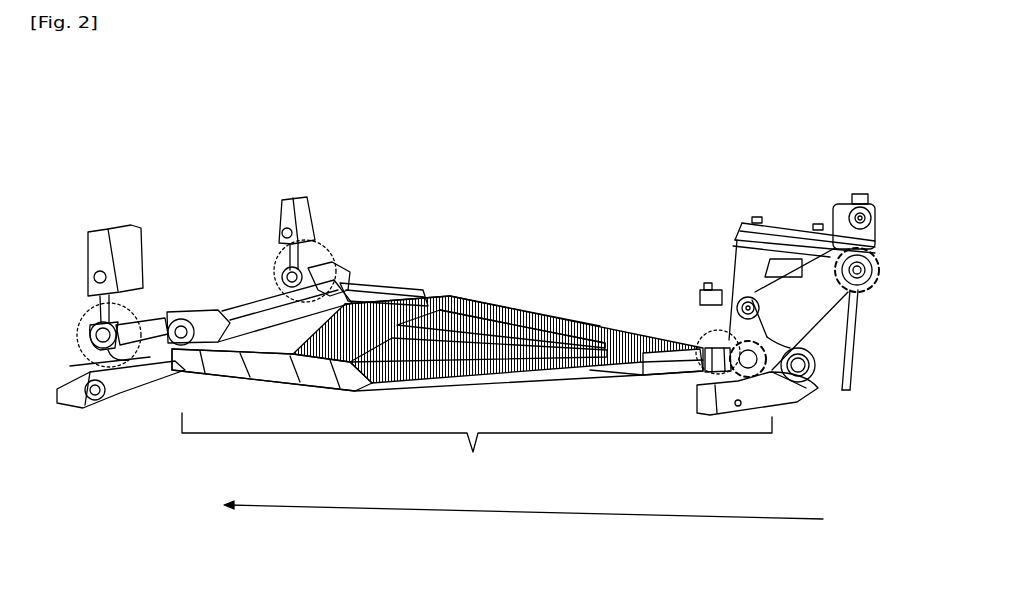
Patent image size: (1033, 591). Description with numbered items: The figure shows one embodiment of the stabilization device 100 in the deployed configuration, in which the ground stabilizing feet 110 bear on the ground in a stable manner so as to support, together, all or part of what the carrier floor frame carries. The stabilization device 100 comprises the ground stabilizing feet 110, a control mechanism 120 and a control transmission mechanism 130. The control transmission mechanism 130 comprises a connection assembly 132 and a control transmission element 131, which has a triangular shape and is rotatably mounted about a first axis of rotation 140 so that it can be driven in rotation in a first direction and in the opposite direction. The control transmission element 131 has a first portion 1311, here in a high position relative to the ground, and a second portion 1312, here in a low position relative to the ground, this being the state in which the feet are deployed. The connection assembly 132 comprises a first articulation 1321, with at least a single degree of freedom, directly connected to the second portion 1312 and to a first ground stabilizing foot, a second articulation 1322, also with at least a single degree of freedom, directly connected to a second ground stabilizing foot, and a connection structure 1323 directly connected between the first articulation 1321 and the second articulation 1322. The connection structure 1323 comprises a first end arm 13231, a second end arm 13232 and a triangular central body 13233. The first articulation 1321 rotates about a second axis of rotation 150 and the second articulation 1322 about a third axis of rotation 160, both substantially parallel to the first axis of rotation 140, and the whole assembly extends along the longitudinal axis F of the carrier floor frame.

The stabilization device 100 is at (156, 125).
The ground stabilizing feet 110 is at (88, 422).
The control mechanism 120 is at (886, 230).
The control transmission mechanism 130 is at (535, 293).
The control transmission element 131 is at (798, 319).
The first portion of the control transmission element 1311 is at (943, 303).
The second portion of the control transmission element 1312 is at (768, 372).
The connection assembly 132 is at (487, 384).
The first articulation 1321 is at (697, 330).
The second articulation 1322 is at (263, 260).
The connection structure 1323 is at (458, 480).
The first end arm 13231 is at (670, 335).
The second end arm 13232 is at (407, 290).
The central body 13233 is at (452, 295).
The first axis of rotation 140 is at (748, 295).
The second axis of rotation 150 is at (758, 306).
The third axis of rotation 160 is at (88, 257).
The longitudinal axis F is at (418, 510).